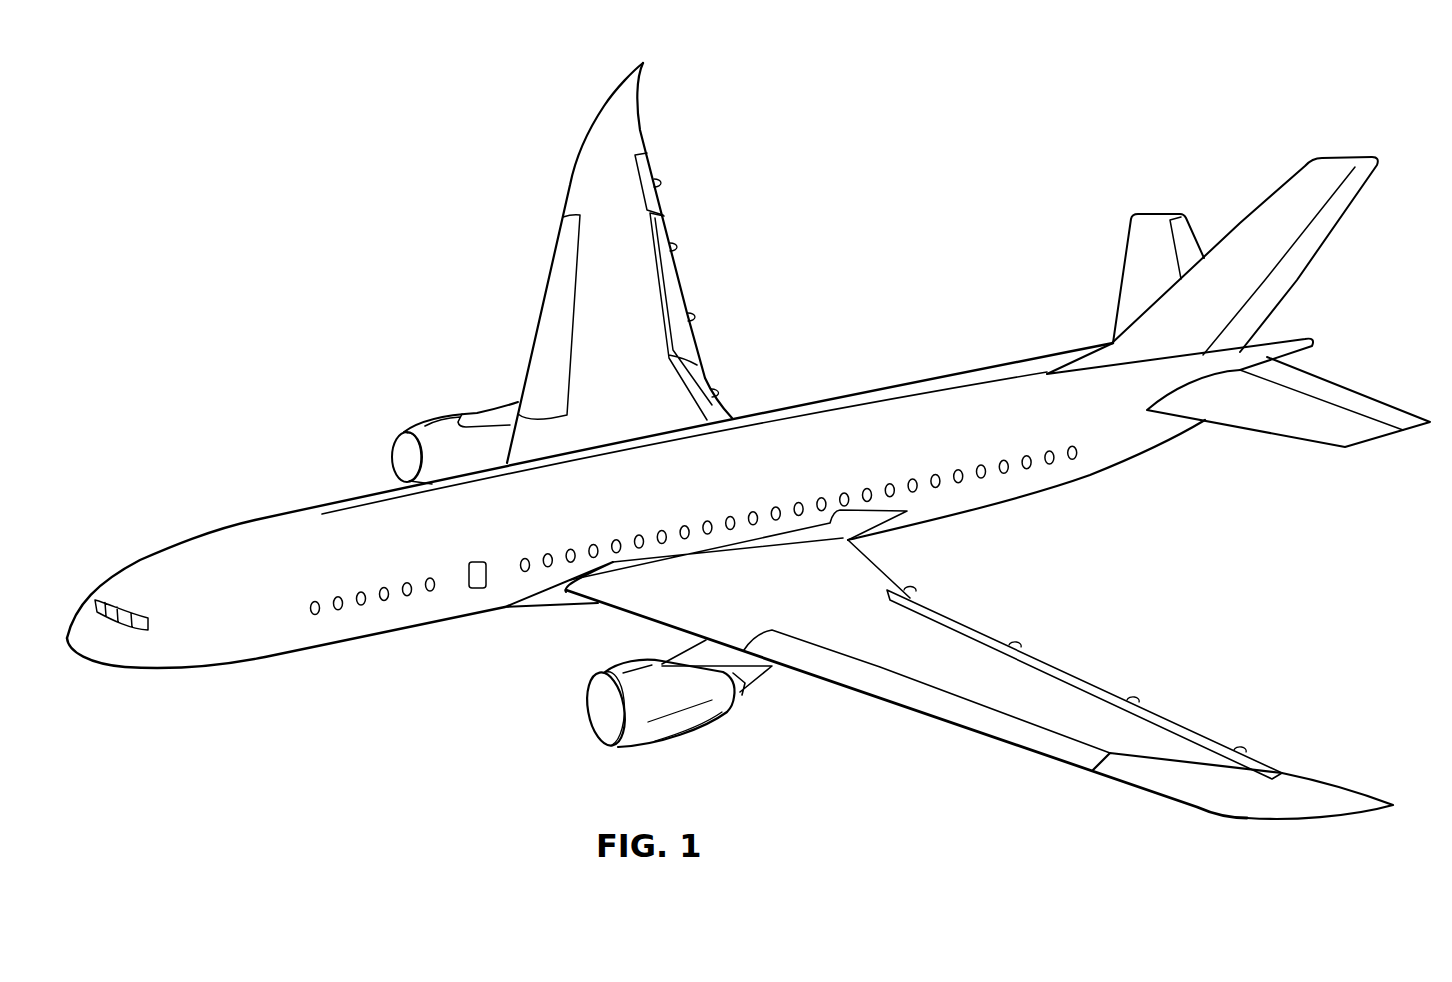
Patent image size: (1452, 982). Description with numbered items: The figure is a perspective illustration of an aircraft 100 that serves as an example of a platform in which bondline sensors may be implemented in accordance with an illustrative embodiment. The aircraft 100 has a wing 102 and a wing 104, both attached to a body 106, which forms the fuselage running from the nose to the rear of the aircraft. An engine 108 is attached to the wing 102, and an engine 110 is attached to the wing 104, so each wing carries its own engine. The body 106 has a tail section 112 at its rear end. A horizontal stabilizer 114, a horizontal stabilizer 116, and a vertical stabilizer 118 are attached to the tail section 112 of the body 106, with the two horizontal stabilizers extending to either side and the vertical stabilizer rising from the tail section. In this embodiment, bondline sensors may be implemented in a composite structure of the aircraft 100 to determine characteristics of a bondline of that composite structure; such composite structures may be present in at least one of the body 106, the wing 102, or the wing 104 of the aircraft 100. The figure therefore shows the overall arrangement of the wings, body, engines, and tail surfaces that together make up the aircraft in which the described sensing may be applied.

The aircraft 100 is at (341, 212).
The wing 102 is at (640, 100).
The wing 104 is at (1233, 819).
The body 106 is at (248, 518).
The engine 108 is at (435, 413).
The engine 110 is at (685, 742).
The tail section 112 is at (1189, 478).
The horizontal stabilizer 114 is at (1120, 274).
The horizontal stabilizer 116 is at (1293, 437).
The vertical stabilizer 118 is at (1323, 245).